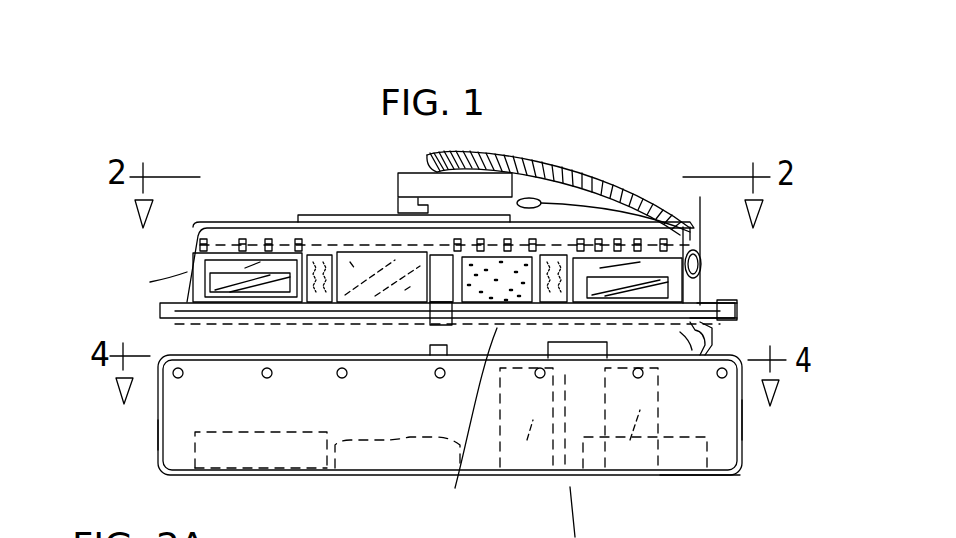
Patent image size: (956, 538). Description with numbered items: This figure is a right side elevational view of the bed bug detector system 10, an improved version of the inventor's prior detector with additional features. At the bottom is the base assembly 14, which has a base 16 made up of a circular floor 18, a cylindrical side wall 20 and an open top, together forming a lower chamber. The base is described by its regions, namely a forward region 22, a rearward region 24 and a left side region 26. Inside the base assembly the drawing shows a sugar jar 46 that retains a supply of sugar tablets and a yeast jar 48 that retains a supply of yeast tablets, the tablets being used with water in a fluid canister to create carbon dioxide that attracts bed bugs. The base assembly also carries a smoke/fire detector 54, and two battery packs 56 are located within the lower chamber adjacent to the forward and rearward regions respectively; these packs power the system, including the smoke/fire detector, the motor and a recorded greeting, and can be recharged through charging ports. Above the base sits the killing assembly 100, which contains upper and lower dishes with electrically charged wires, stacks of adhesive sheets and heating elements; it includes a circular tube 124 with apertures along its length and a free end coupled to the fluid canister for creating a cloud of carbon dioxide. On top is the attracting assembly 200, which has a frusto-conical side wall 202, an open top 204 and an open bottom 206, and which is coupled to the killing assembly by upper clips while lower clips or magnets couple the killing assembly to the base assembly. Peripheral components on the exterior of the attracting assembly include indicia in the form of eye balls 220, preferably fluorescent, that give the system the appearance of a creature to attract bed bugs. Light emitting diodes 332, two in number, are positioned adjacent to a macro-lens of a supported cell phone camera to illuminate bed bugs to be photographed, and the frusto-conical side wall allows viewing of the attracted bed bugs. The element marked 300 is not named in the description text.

The bed bug detector system 10 is at (672, 110).
The base assembly 14 is at (778, 262).
The base 16 is at (693, 478).
The circular floor 18 is at (258, 470).
The cylindrical side wall 20 is at (158, 407).
The forward region 22 is at (745, 440).
The rearward region 24 is at (158, 442).
The left side region 26 is at (417, 397).
The sugar jar 46 is at (512, 490).
The yeast jar 48 is at (622, 485).
The smoke/fire detector 54 is at (395, 450).
The battery packs 56 is at (295, 452).
The killing assembly 100 is at (758, 320).
The tube 124 is at (455, 488).
The attracting assembly 200 is at (330, 203).
The frusto-conical side wall 202 is at (185, 272).
The open top 204 is at (295, 222).
The open bottom 206 is at (702, 330).
The eye balls 220 is at (700, 197).
The platform 300 is at (150, 335).
The light emitting diodes 332 is at (540, 200).